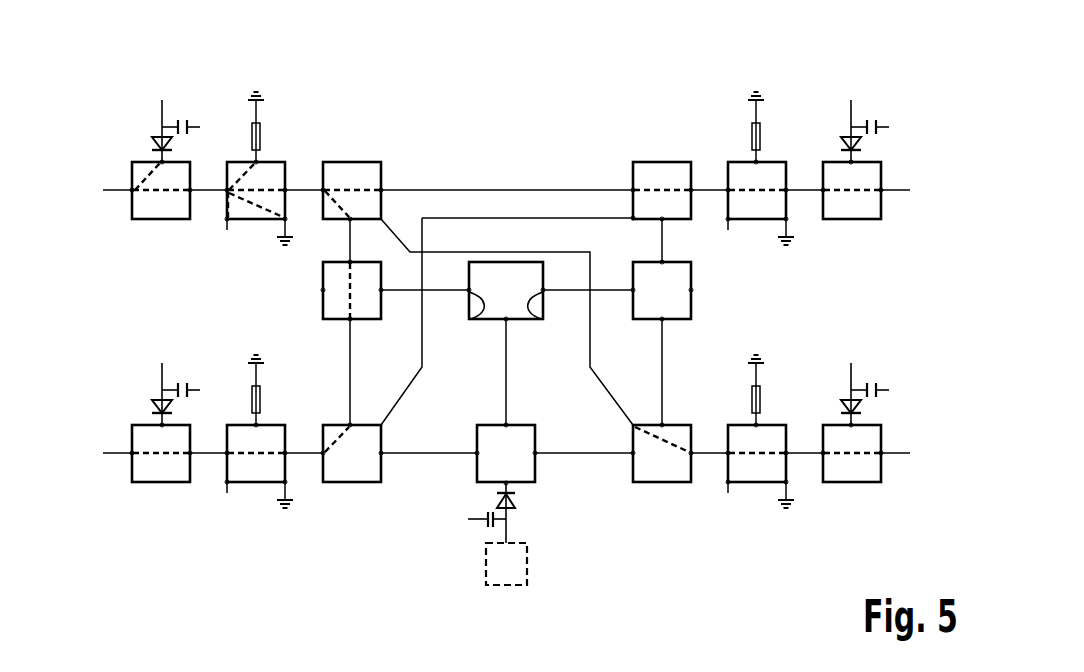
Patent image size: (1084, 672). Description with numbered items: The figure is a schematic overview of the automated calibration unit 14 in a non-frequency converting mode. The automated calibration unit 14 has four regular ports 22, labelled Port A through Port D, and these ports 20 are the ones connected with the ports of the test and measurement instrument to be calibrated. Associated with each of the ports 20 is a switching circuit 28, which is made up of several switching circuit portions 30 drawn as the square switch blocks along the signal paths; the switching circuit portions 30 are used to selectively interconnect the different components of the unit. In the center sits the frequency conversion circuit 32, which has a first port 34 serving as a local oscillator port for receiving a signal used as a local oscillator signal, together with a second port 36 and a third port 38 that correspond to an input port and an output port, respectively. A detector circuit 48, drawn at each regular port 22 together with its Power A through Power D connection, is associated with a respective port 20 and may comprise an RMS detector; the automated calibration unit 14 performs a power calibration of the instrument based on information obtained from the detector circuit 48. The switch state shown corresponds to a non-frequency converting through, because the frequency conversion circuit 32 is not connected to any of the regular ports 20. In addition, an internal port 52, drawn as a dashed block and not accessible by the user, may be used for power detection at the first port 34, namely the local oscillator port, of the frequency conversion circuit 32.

The automated calibration unit 14 is at (587, 125).
The port 20 is at (102, 202).
The regular port 22 is at (62, 172).
The switching circuit 28 is at (339, 125).
The switching circuit portion 30 is at (162, 220).
The frequency conversion circuit 32 is at (492, 262).
The first port 34 is at (504, 318).
The second port 36 is at (474, 320).
The third port 38 is at (537, 320).
The detector circuit 48 is at (142, 112).
The internal port 52 is at (527, 570).